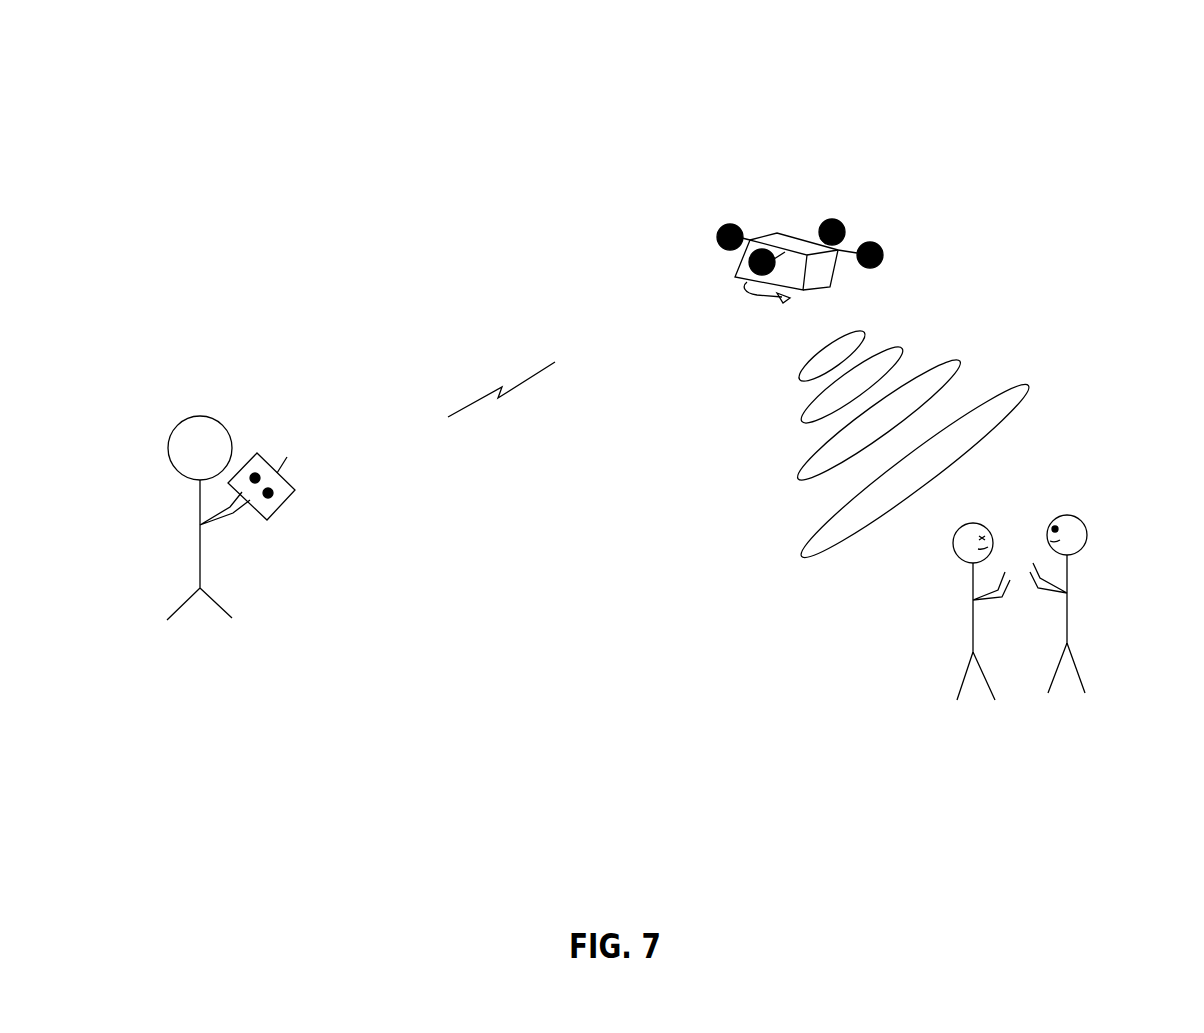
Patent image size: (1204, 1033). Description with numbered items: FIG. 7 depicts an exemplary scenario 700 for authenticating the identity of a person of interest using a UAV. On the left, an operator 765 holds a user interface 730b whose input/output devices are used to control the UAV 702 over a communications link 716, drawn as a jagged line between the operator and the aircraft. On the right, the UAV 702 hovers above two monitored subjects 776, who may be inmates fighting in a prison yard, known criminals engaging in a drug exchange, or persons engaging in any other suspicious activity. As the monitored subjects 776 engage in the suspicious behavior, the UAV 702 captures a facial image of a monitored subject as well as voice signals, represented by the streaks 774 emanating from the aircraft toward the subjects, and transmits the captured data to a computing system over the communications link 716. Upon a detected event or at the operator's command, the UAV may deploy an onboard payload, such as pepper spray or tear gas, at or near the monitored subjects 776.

The environment / system 700 is at (1137, 141).
The UAV 702 is at (862, 232).
The communications link 716 is at (533, 377).
The user interface 730b is at (287, 473).
The operator 765 is at (180, 423).
The sound waves / speech 774 is at (1017, 382).
The monitored subjects 776 is at (1063, 702).